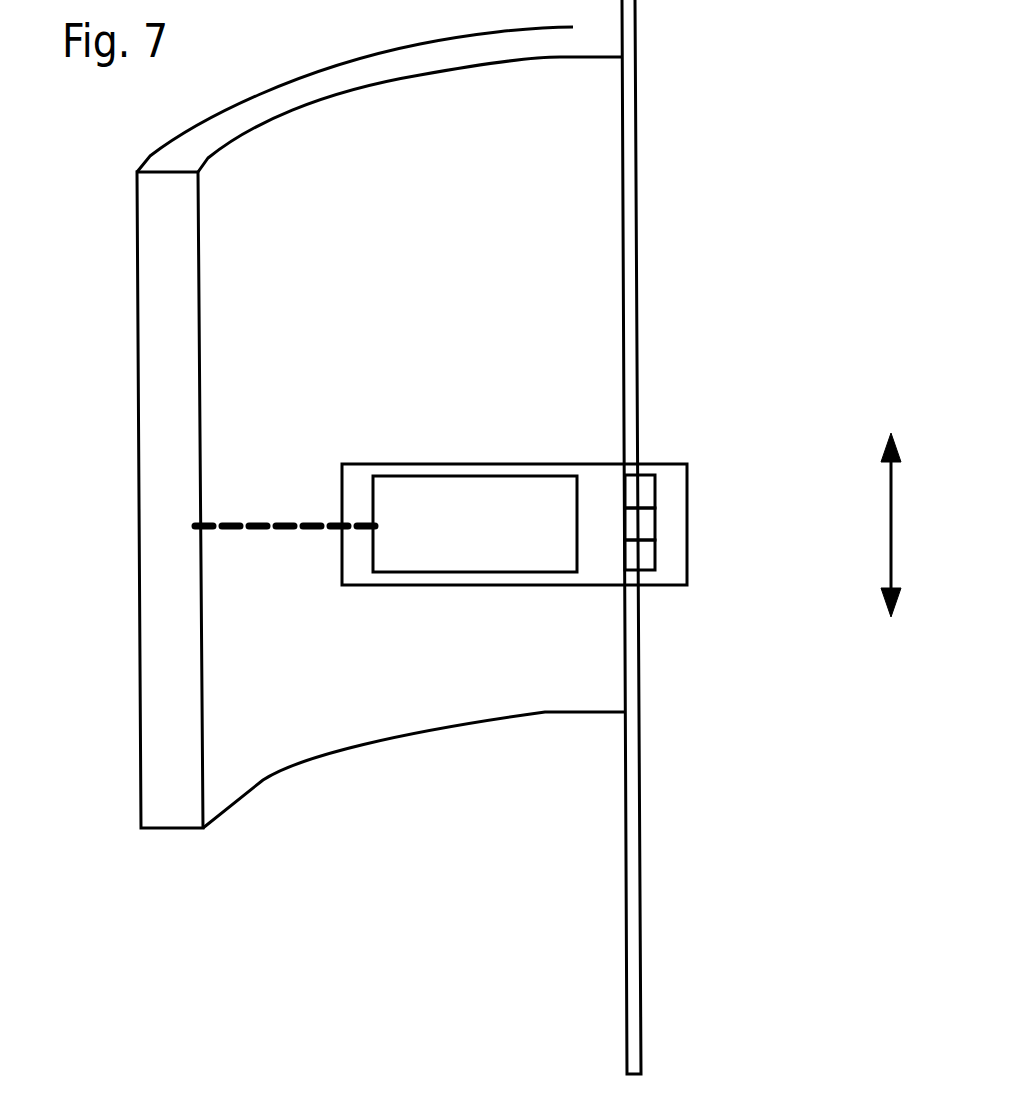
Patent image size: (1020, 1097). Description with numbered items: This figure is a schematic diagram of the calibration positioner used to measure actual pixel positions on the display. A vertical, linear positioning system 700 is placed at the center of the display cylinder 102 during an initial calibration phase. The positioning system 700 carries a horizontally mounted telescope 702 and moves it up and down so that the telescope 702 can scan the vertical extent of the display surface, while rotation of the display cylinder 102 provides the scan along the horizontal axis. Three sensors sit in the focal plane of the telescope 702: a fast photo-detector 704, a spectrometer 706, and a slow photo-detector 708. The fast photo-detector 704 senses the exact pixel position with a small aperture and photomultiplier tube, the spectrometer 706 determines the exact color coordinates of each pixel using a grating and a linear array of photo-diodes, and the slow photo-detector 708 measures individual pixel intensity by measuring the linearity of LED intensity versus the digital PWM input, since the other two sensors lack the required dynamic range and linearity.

The display cylinder 102 is at (167, 401).
The vertical linear positioning system 700 is at (732, 273).
The telescope 702 is at (408, 545).
The fast photo-detector 704 is at (638, 457).
The spectrometer 706 is at (655, 512).
The slow photo-detector 708 is at (645, 540).